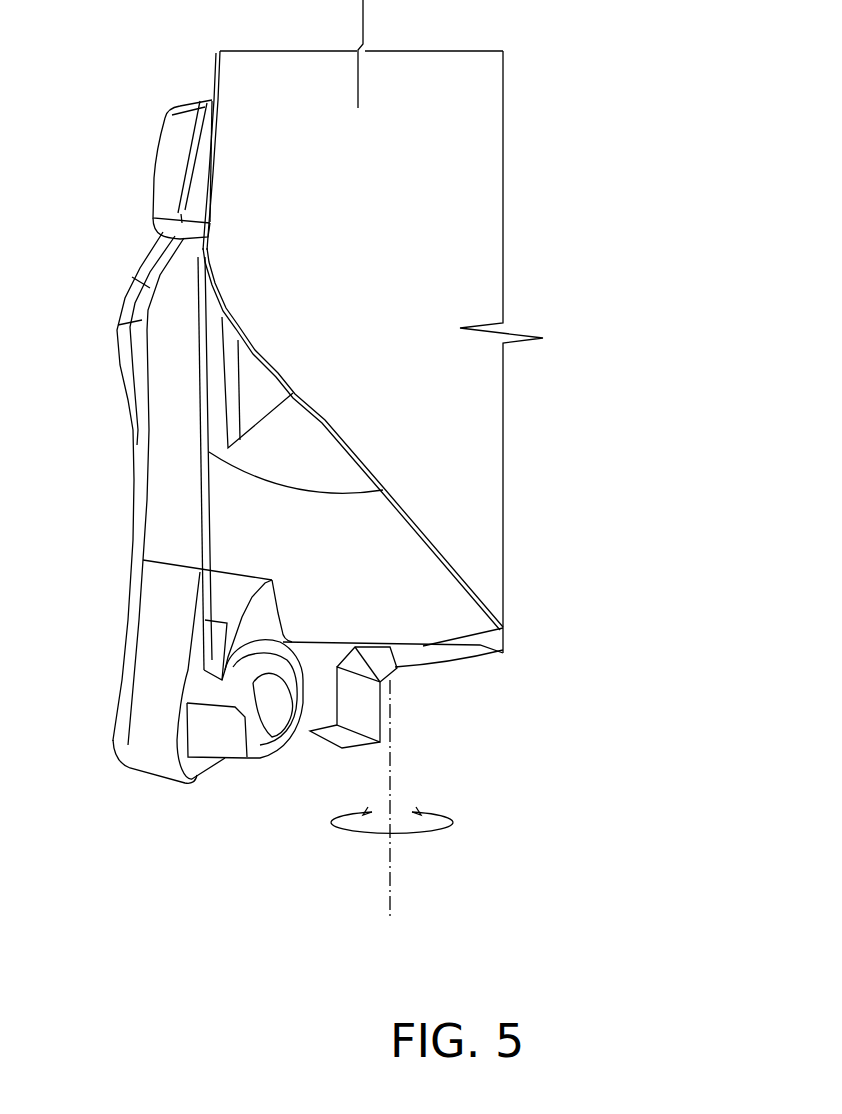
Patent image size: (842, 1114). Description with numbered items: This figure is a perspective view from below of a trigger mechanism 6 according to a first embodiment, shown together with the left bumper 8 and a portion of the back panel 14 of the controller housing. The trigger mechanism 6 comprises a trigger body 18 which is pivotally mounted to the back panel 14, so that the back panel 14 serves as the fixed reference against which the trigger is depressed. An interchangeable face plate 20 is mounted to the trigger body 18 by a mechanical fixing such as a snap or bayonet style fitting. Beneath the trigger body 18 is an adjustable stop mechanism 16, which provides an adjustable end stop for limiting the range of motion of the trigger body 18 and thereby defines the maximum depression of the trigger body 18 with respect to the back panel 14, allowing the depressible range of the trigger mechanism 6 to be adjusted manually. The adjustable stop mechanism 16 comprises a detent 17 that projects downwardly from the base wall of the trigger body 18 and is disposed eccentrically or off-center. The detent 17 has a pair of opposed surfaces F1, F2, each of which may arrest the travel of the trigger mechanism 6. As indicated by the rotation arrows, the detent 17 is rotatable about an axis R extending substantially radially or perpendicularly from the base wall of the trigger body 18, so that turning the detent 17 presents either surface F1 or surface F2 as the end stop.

The trigger mechanism 6 is at (98, 211).
The left bumper 8 is at (173, 132).
The back panel 14 is at (376, 218).
The adjustable stop mechanism 16 is at (320, 658).
The detent 17 is at (347, 727).
The trigger body 18 is at (362, 575).
The face plate 20 is at (191, 530).
The opposed surface F1 is at (322, 712).
The opposed surface F2 is at (360, 703).
The axis of rotation R is at (392, 815).